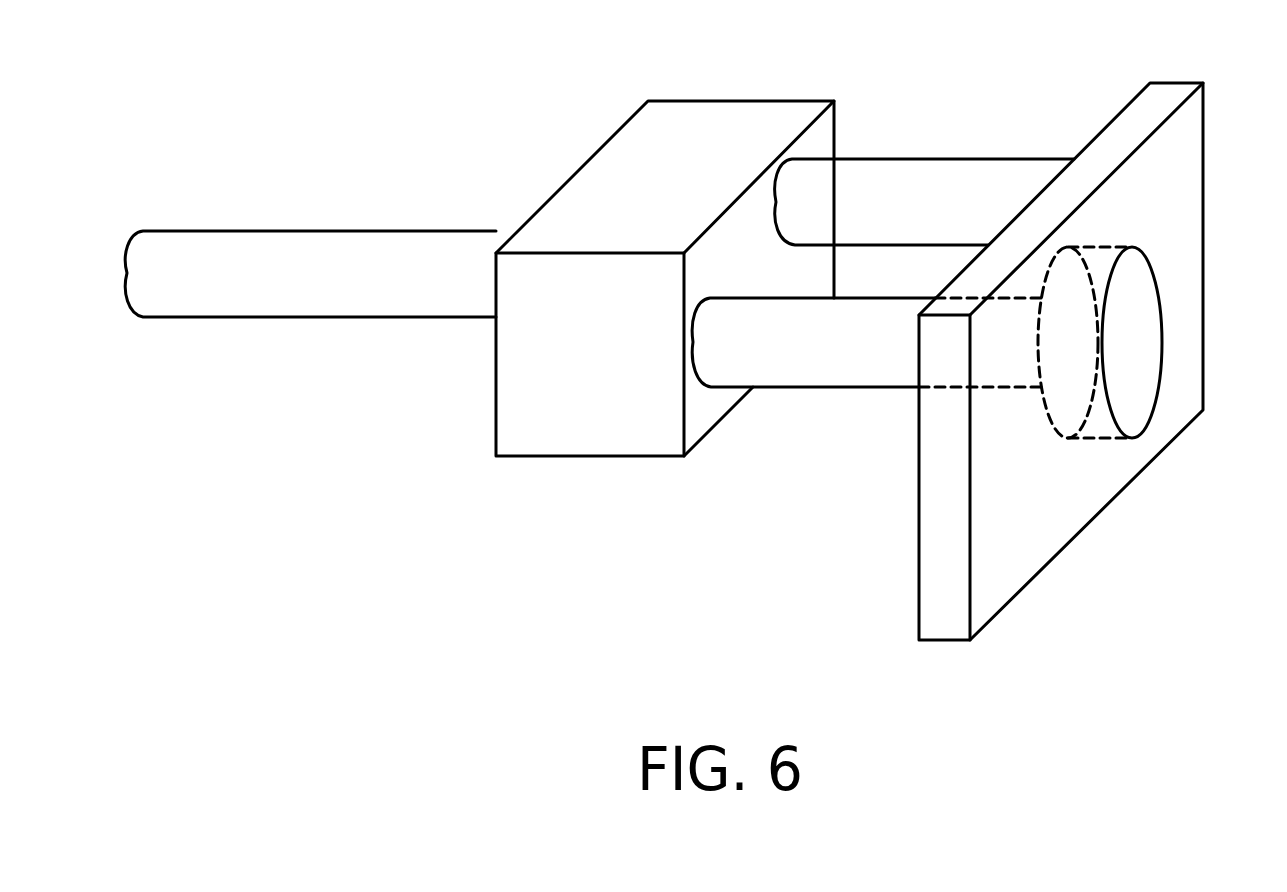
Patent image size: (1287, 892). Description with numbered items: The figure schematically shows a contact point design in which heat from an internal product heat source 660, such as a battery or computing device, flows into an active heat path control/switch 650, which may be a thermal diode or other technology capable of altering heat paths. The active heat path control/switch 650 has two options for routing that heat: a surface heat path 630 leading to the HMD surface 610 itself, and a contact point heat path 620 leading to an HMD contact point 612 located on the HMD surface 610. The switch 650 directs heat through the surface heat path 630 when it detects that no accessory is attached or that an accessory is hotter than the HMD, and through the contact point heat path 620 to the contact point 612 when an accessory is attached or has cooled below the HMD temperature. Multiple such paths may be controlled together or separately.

The HMD surface 610 is at (1182, 187).
The HMD contact point 612 is at (1163, 350).
The contact point heat path 620 is at (847, 374).
The surface heat path 630 is at (953, 175).
The active heat path control/switch 650 is at (508, 415).
The internal product heat source 660 is at (328, 292).